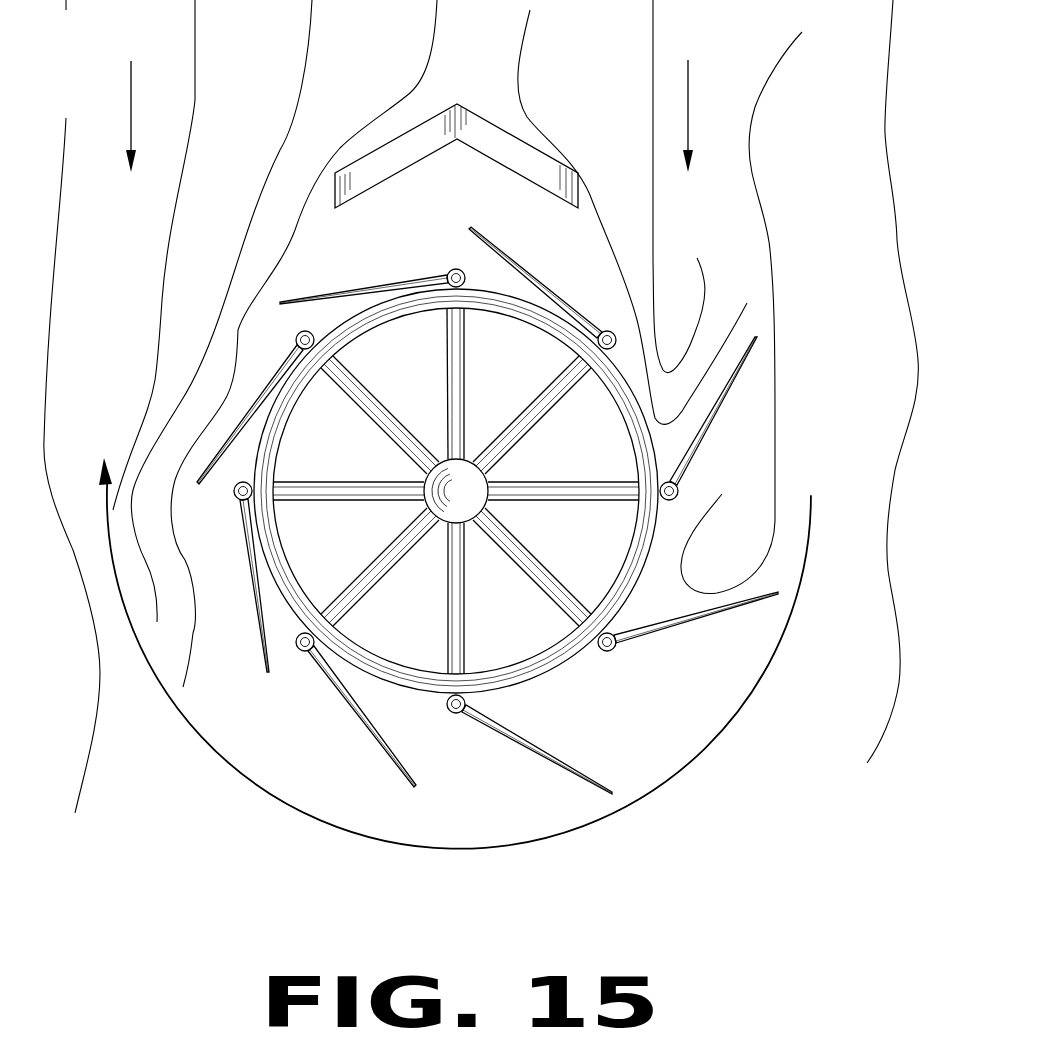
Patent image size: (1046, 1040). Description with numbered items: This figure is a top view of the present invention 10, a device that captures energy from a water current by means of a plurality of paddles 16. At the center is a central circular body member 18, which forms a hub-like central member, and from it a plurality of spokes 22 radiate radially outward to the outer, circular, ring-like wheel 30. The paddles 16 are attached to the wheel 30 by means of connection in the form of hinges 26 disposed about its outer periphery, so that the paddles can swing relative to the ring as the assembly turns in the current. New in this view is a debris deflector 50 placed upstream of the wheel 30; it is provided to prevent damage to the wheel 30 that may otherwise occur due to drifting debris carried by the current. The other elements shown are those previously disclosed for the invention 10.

The present invention 10 is at (502, 503).
The paddles 16 is at (253, 407).
The central circular body member 18 is at (500, 512).
The spokes 22 is at (378, 560).
The hinges 26 is at (295, 341).
The wheel 30 is at (545, 676).
The debris deflector 50 is at (527, 133).